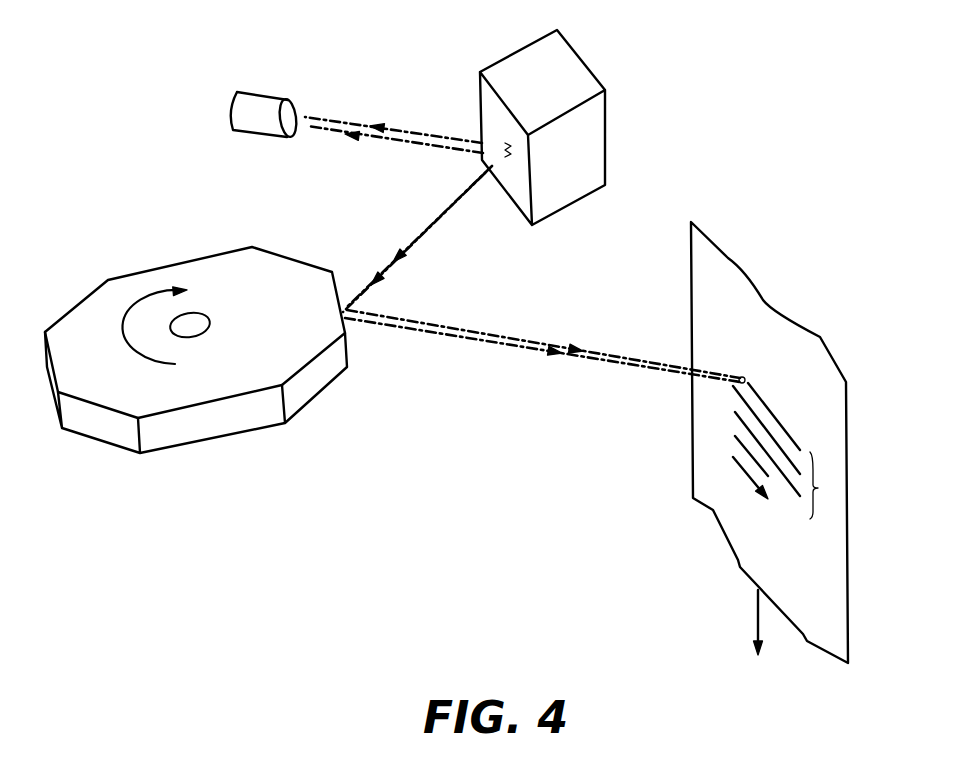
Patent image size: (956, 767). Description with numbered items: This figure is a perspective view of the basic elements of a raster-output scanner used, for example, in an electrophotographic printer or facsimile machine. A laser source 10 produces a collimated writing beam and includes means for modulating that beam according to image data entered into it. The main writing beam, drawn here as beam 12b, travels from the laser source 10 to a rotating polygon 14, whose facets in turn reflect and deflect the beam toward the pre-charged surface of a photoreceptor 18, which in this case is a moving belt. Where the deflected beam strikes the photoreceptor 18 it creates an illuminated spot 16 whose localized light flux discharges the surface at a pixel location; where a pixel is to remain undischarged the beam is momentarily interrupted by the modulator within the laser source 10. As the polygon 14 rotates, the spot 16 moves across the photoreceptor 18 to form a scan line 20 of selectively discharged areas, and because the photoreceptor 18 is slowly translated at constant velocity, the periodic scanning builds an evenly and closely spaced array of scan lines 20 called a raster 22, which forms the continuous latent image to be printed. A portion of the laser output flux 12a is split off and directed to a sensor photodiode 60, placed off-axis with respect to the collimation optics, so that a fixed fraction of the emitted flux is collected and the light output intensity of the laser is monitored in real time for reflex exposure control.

The laser source 10 is at (567, 62).
The portion of the output flux 12a is at (315, 117).
The reflected light beam 12b is at (310, 129).
The rotating polygon 14 is at (105, 291).
The illuminated spot 16 is at (740, 377).
The photoreceptor 18 is at (713, 510).
The scan line 20 is at (772, 414).
The raster 22 is at (818, 488).
The sensor photodiode 60 is at (233, 96).